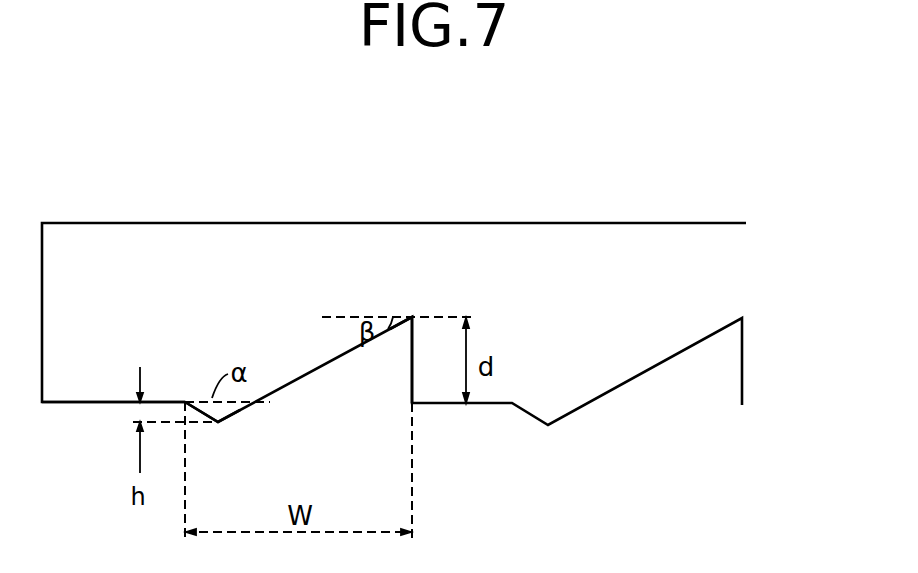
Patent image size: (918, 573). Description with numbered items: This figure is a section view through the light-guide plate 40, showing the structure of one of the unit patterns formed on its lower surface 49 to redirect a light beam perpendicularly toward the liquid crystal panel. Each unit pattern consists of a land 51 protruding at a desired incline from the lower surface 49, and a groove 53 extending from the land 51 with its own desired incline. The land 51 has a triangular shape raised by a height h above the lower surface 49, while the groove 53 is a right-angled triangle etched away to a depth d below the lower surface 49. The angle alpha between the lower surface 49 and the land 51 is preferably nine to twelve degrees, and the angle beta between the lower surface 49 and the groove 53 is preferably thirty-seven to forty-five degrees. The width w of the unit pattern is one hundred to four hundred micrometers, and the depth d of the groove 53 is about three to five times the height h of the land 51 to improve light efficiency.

The light-guide plate 40 is at (584, 276).
The lower surface 49 is at (62, 404).
The land 51 is at (218, 422).
The groove 53 is at (412, 318).